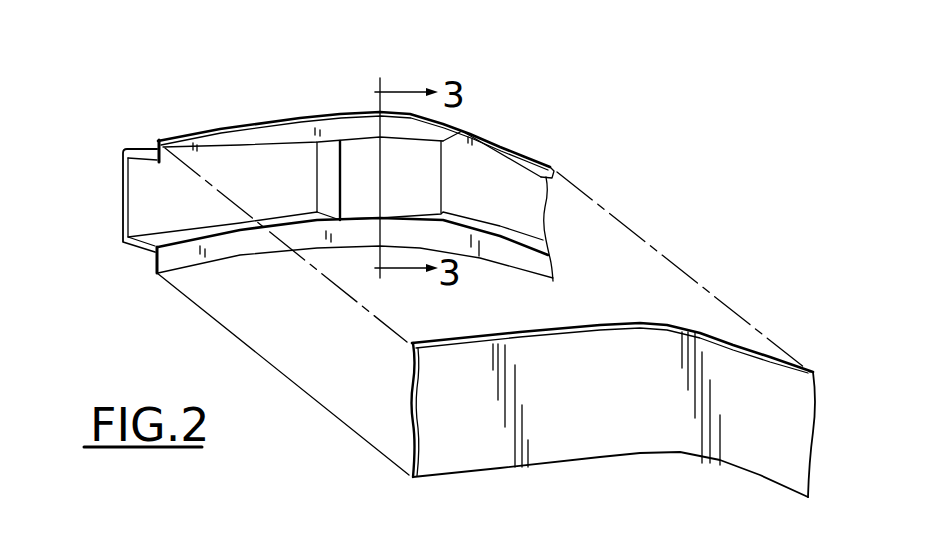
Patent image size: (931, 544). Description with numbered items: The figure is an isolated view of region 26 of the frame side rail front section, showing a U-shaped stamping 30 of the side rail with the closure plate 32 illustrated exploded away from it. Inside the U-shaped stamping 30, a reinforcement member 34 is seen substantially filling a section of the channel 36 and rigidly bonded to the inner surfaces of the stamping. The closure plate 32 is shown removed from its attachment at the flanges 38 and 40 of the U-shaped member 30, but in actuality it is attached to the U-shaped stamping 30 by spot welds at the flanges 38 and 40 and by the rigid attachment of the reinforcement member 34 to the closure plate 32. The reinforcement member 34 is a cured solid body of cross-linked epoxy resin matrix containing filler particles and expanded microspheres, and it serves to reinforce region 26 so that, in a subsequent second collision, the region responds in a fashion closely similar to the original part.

The region 26 is at (238, 47).
The U-shaped stamping 30 is at (140, 150).
The closure plate 32 is at (686, 449).
The reinforcement member 34 is at (449, 152).
The channel 36 is at (145, 206).
The flange 38 is at (221, 139).
The flange 40 is at (174, 259).